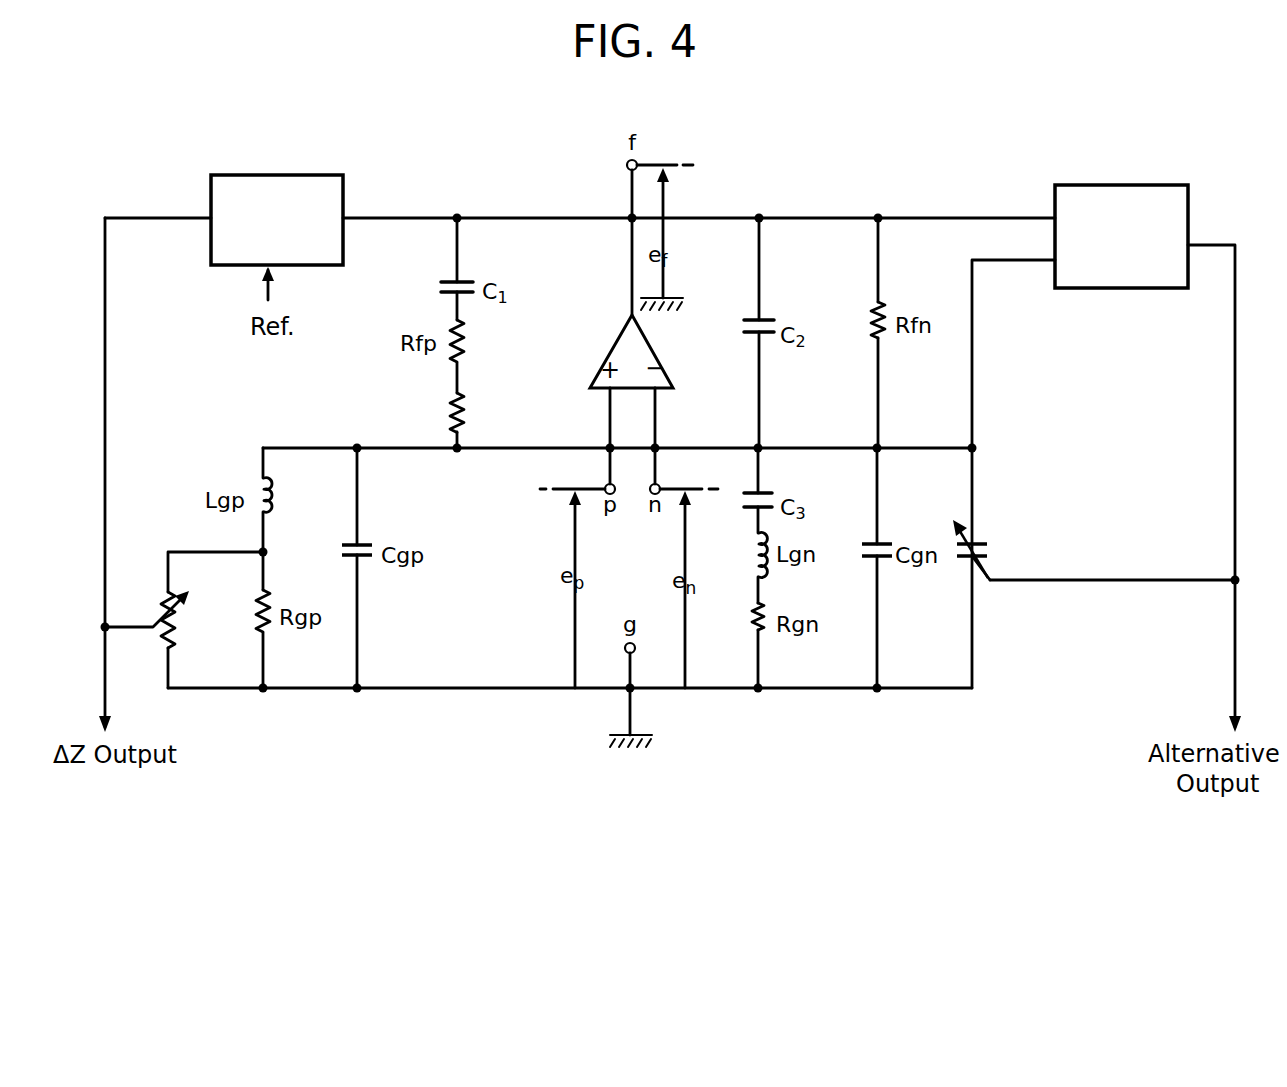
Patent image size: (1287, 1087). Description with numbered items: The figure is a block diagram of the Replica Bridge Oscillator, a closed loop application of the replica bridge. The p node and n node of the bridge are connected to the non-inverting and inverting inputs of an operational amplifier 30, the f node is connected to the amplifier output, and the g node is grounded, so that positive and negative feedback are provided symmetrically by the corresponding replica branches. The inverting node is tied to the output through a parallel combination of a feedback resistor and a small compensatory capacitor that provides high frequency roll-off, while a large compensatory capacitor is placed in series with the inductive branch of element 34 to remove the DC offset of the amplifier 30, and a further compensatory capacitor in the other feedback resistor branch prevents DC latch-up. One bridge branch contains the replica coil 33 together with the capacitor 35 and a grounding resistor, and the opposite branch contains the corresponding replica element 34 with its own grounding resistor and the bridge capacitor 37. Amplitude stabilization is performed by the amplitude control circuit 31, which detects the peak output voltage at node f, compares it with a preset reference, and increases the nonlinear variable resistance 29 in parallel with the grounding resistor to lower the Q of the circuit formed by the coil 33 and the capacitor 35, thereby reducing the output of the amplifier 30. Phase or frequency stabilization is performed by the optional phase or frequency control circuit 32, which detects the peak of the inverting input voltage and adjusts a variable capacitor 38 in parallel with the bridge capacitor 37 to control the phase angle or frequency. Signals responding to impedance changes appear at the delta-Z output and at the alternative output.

The variable resistance 29 is at (154, 618).
The operational amplifier 30 is at (640, 362).
The amplitude control circuit 31 is at (306, 179).
The phase or frequency control circuit 32 is at (1137, 189).
The coil Lgp 33 is at (274, 501).
The element Lgn 34 is at (754, 564).
The capacitor Cgp 35 is at (343, 552).
The capacitor Cgn 37 is at (864, 547).
The variable capacitor 38 is at (988, 550).